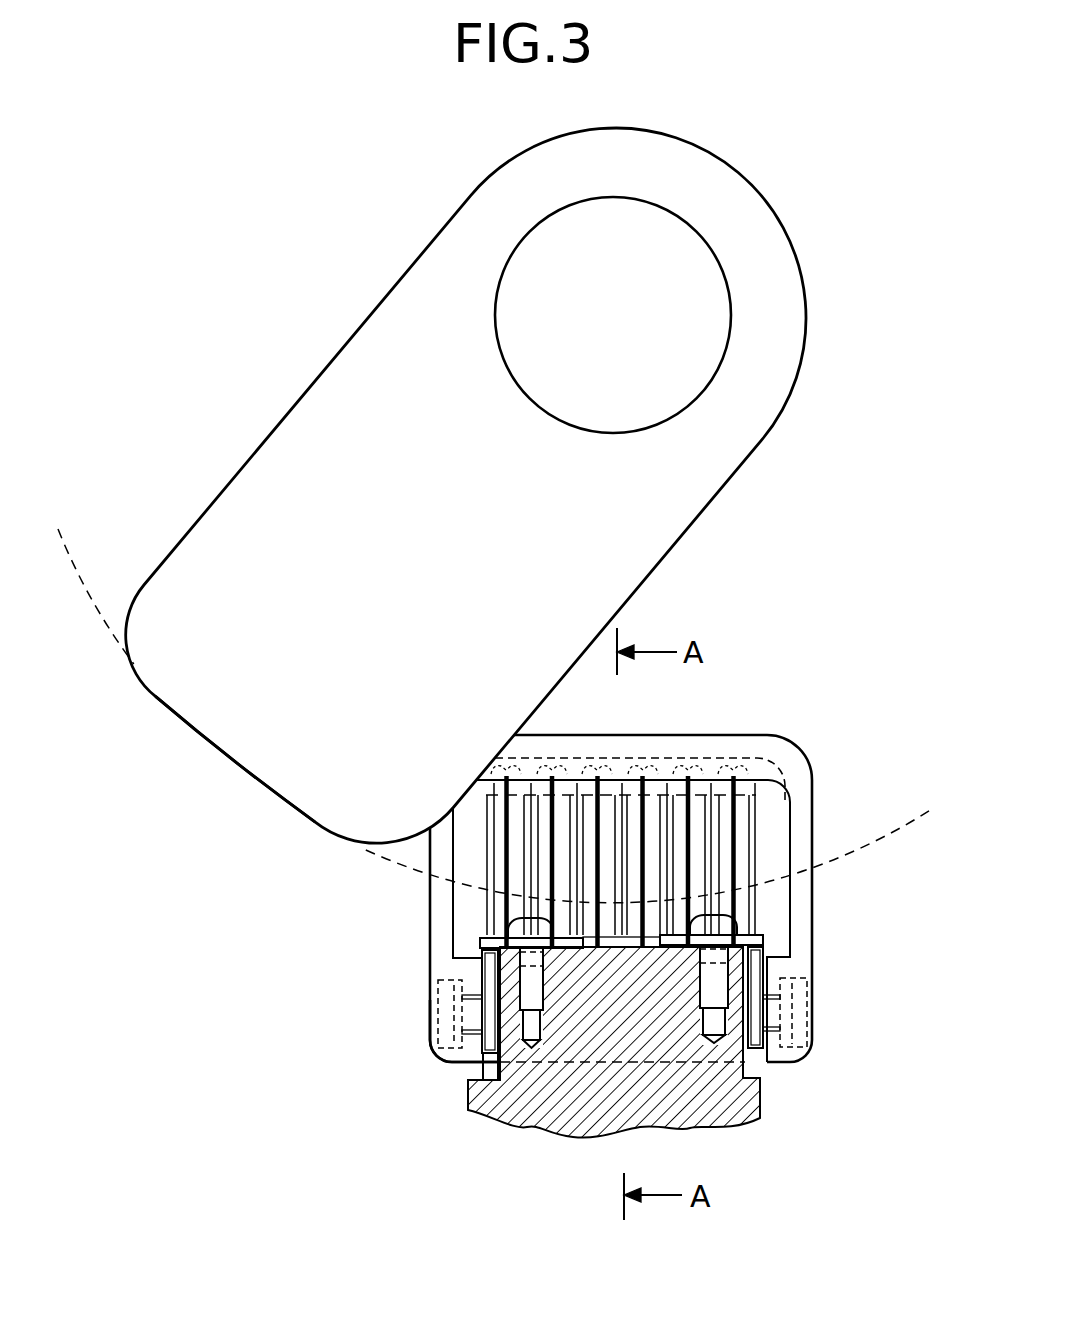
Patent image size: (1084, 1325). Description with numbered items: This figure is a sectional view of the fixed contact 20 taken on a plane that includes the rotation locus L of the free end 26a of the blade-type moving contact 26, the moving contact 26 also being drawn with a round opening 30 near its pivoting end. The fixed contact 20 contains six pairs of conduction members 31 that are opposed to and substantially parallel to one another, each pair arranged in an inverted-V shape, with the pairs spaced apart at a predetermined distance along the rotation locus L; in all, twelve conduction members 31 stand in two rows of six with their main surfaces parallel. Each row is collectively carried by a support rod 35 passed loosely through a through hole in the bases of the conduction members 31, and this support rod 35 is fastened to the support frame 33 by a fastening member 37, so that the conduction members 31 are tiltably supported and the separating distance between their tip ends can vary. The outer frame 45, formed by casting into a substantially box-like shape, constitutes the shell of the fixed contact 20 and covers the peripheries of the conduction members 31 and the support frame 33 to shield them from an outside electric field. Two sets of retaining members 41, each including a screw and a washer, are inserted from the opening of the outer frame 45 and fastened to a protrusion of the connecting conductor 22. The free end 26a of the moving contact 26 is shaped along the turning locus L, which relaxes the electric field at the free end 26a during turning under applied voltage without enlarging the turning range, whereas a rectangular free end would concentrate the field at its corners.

The fixed contact 20 is at (314, 918).
The connecting conductor 22 is at (747, 1065).
The moving contact 26 is at (297, 405).
The free end 26a is at (158, 700).
The pivot hole 30 is at (696, 232).
The conduction members 31 is at (752, 832).
The support frame 33 is at (487, 1055).
The support rod 35 is at (437, 1040).
The fastening member 37 is at (455, 1066).
The retaining members 41 is at (508, 926).
The outer frame 45 is at (717, 735).
The rotation locus L is at (915, 822).